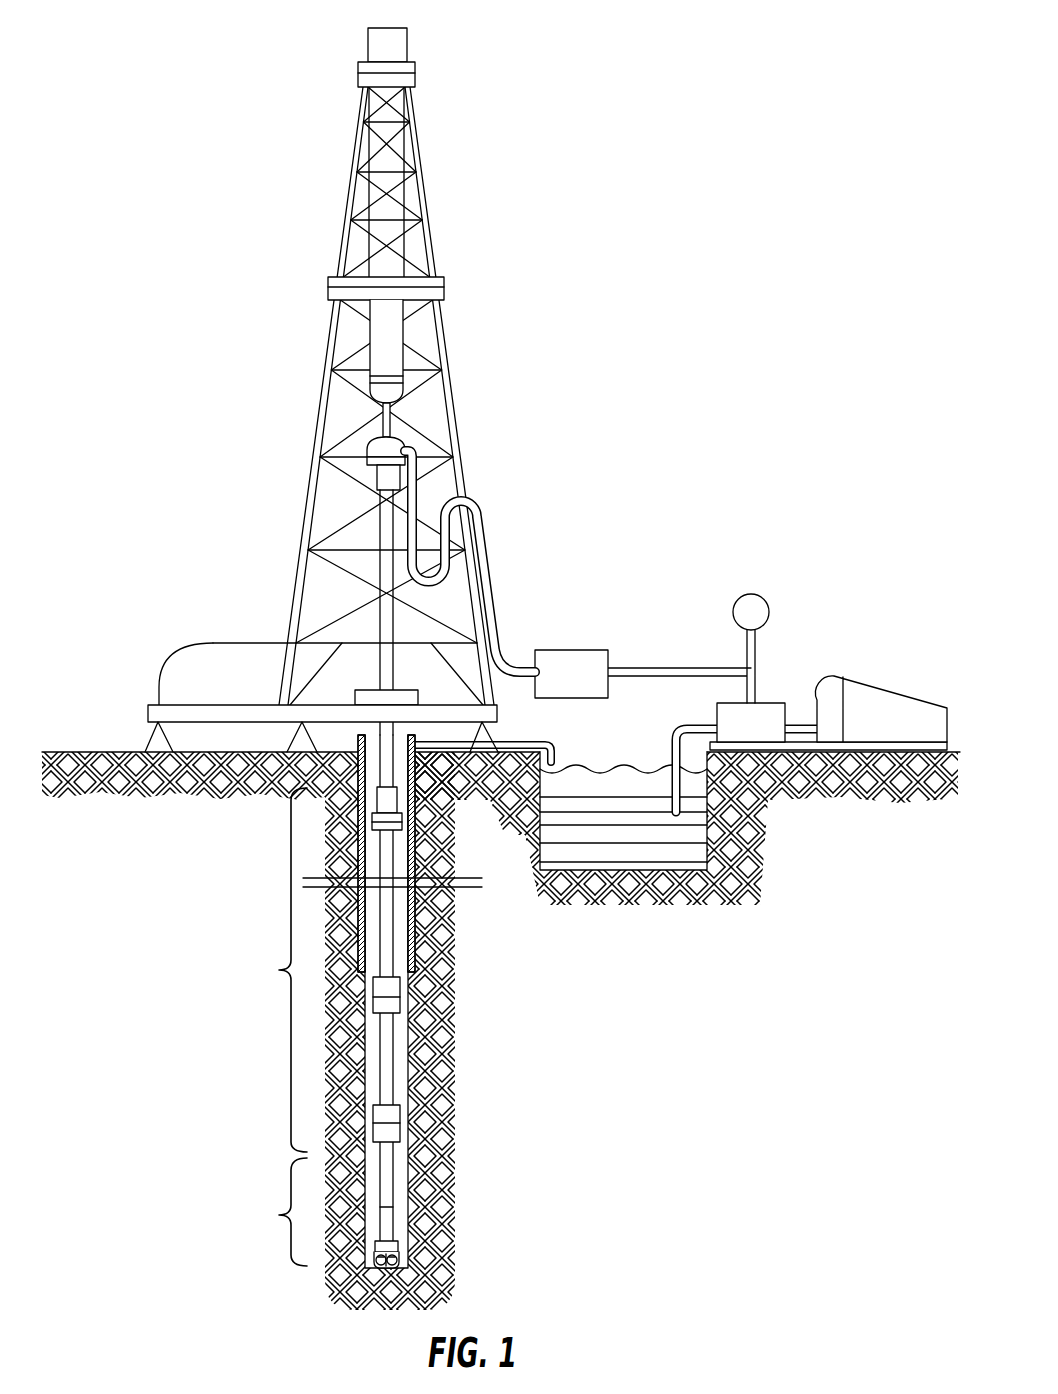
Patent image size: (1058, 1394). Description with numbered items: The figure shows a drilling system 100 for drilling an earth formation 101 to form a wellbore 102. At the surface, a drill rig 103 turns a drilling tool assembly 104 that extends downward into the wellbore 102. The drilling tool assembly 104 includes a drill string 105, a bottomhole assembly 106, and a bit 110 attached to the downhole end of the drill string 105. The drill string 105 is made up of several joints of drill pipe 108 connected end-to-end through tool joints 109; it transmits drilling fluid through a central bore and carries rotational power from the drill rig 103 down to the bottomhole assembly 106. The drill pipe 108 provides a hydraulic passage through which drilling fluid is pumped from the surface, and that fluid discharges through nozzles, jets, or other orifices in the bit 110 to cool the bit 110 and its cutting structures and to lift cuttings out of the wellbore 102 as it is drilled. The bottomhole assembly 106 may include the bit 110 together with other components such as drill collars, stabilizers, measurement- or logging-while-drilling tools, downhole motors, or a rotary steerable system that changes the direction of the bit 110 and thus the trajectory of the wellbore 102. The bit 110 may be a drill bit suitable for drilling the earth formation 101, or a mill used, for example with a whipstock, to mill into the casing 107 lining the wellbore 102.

The drilling system 100 is at (501, 663).
The earth formation 101 is at (686, 828).
The wellbore 102 is at (412, 1100).
The drill rig 103 is at (320, 403).
The drilling tool assembly 104 is at (428, 951).
The drill string 105 is at (279, 970).
The bottomhole assembly 106 is at (279, 1215).
The casing 107 is at (417, 923).
The drill pipe 108 is at (397, 1060).
The tool joints 109 is at (400, 1008).
The bit 110 is at (405, 1257).